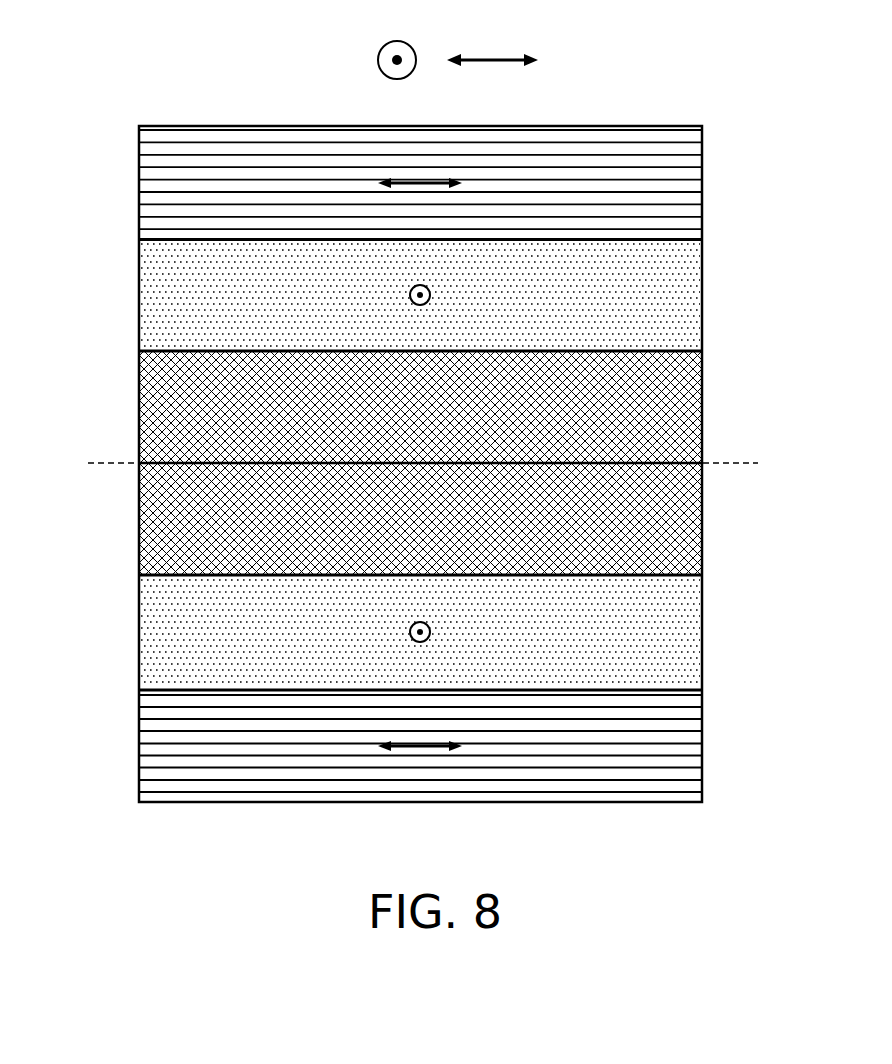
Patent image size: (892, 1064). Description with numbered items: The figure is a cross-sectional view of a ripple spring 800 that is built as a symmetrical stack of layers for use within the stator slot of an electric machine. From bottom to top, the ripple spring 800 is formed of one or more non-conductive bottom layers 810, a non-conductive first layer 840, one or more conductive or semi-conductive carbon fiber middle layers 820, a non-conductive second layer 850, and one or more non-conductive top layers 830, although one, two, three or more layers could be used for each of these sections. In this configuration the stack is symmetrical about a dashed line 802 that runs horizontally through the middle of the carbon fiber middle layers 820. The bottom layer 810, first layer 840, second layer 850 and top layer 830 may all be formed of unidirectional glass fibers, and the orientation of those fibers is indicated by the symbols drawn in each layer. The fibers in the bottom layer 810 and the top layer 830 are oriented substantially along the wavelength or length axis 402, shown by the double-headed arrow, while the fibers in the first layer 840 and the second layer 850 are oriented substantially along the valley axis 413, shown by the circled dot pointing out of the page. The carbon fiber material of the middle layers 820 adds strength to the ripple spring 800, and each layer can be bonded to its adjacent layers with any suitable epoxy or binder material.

The ripple spring 800 is at (668, 50).
The valley axis 413 is at (377, 61).
The length axis 402 is at (498, 60).
The non-conductive top layer 830 is at (703, 178).
The non-conductive second layer 850 is at (139, 297).
The conductive carbon fiber middle layer 820 is at (703, 406).
The dashed line 802 is at (97, 463).
The non-conductive first layer 840 is at (139, 637).
The non-conductive bottom layer 810 is at (703, 743).